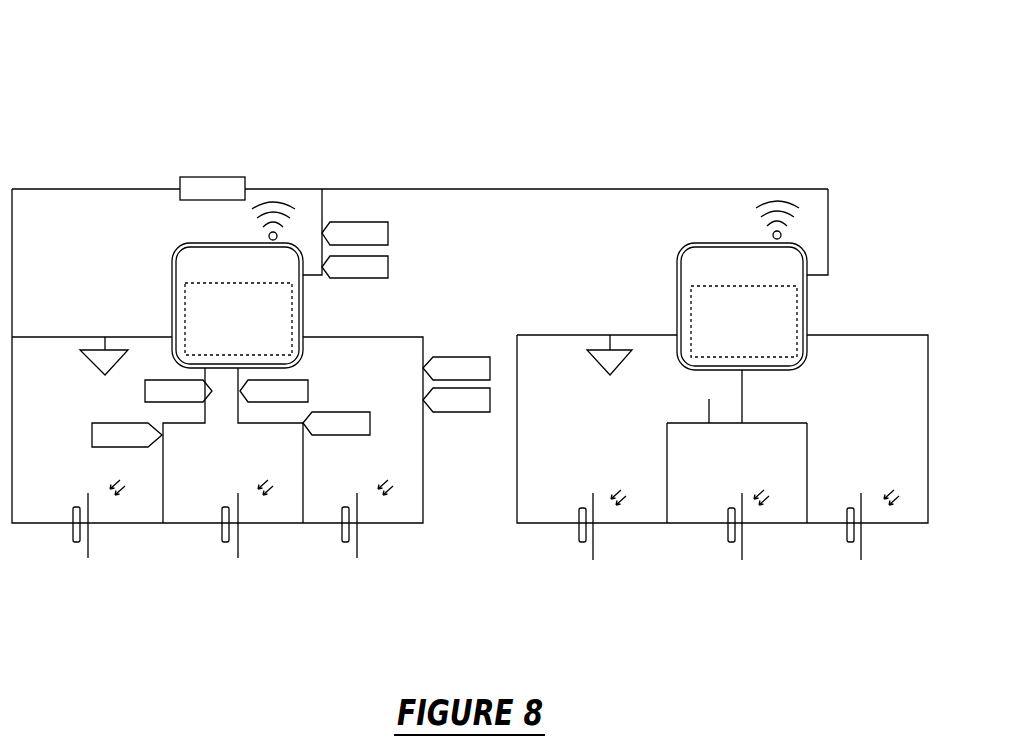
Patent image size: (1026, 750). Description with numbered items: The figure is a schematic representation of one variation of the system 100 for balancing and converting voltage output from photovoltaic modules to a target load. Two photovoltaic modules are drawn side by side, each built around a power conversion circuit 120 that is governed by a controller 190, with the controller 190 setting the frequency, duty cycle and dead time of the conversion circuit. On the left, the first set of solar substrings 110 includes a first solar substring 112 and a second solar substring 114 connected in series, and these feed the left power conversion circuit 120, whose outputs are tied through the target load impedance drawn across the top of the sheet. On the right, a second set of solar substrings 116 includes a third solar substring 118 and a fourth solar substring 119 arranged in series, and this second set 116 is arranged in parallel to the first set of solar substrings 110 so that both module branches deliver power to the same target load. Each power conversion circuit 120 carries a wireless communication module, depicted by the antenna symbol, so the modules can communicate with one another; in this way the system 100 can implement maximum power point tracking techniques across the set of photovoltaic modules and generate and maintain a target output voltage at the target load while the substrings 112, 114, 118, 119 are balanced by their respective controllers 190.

The system 100 is at (129, 55).
The power conversion circuit 120 is at (172, 312).
The controller 190 is at (303, 324).
The first solar substring 112 is at (76, 545).
The second solar substring 114 is at (225, 545).
The first set of solar substrings 110 is at (345, 545).
The third solar substring 118 is at (582, 545).
The fourth solar substring 119 is at (731, 545).
The second set of solar substrings 116 is at (850, 545).